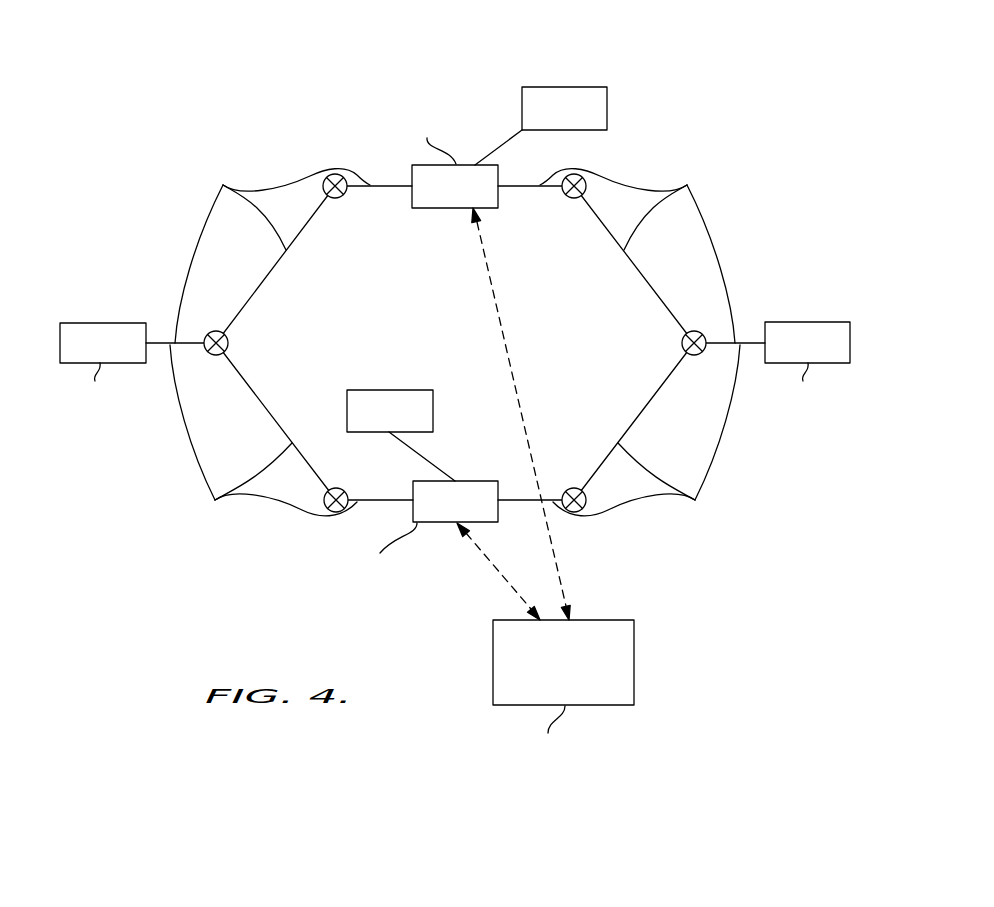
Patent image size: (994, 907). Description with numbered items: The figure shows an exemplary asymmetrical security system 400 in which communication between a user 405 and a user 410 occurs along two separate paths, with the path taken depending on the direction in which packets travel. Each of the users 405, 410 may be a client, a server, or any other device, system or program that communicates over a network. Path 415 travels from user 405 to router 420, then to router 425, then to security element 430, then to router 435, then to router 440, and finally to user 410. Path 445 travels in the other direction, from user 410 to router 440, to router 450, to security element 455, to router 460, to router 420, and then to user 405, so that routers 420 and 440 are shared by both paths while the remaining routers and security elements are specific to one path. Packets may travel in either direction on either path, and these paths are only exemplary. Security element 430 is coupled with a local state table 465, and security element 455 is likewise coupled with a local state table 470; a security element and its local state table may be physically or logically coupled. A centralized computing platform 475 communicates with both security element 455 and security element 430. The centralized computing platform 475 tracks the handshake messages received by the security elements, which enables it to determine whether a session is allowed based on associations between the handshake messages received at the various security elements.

The asymmetrical security system 400 is at (250, 61).
The user 405 is at (100, 322).
The user 410 is at (808, 322).
The path 415 is at (455, 253).
The router 420 is at (228, 343).
The router 425 is at (339, 198).
The security element 430 is at (437, 165).
The router 435 is at (571, 198).
The router 440 is at (682, 343).
The path 445 is at (455, 435).
The router 450 is at (571, 489).
The security element 455 is at (498, 512).
The router 460 is at (342, 489).
The local state table 465 is at (608, 108).
The local state table 470 is at (434, 411).
The centralized computing platform 475 is at (635, 663).